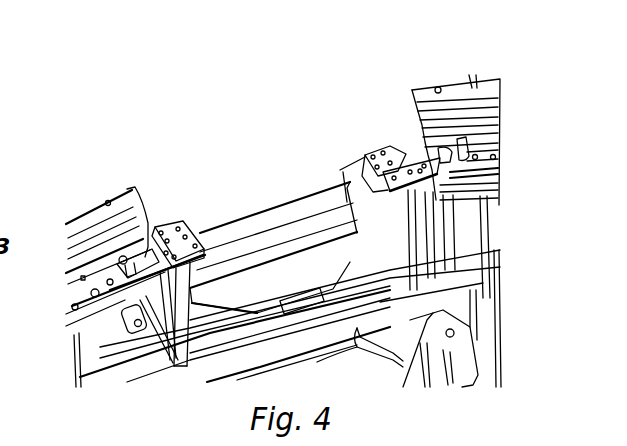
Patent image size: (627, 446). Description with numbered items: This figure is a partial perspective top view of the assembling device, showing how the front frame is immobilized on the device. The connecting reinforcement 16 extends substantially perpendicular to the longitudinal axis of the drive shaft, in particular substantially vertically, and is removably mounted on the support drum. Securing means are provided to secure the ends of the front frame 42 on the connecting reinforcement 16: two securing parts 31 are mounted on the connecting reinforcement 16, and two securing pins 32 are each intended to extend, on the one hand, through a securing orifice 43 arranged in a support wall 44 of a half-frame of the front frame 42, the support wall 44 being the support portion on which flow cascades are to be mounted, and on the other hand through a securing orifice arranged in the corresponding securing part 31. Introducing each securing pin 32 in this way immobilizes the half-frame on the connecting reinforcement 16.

The connecting reinforcement 16 is at (460, 282).
The securing part 31 is at (183, 253).
The securing pin 32 is at (123, 258).
The front frame 42 is at (475, 92).
The securing orifice 43 is at (98, 290).
The support wall 44 is at (96, 300).